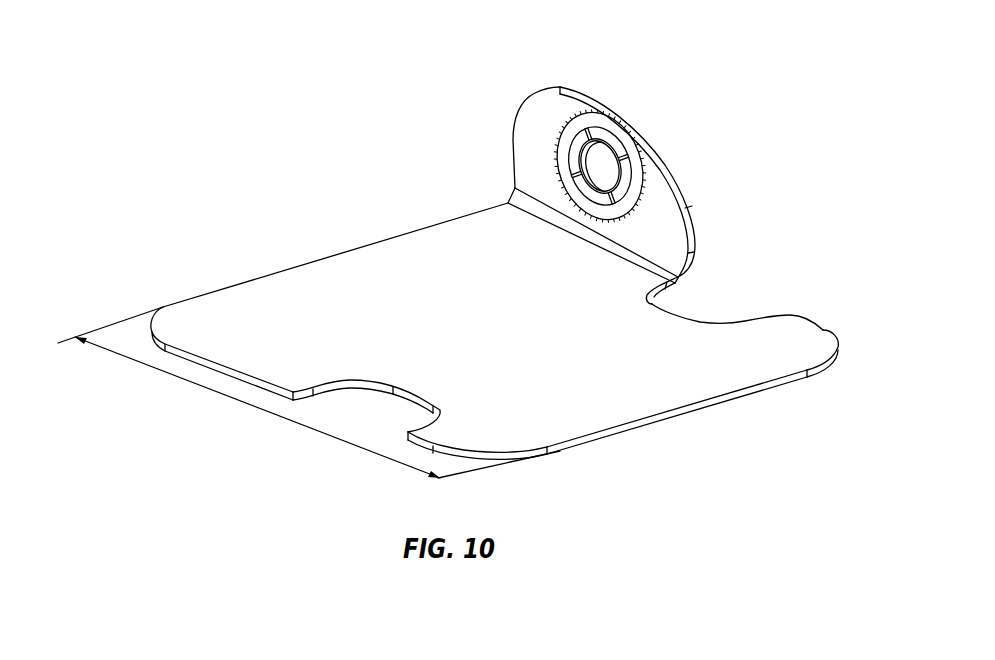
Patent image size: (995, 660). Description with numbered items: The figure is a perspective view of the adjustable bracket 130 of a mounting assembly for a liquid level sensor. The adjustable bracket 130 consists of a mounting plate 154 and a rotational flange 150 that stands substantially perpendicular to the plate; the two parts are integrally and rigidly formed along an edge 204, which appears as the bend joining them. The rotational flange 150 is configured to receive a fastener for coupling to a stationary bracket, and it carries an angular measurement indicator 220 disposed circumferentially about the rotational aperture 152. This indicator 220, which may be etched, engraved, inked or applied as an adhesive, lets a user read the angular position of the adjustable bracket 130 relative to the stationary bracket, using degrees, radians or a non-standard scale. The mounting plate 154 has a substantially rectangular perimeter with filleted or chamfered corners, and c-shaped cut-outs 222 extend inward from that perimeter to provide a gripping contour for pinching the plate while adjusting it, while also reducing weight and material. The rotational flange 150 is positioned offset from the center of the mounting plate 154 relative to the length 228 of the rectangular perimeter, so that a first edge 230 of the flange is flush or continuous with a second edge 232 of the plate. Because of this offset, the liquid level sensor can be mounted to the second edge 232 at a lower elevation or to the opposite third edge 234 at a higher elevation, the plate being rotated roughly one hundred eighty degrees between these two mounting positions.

The adjustable bracket 130 is at (311, 105).
The rotational flange 150 is at (663, 183).
The rotational aperture 152 is at (620, 143).
The mounting plate 154 is at (550, 408).
The edge 204 is at (663, 255).
The angular measurement indicator 220 is at (585, 112).
The cut-outs 222 is at (726, 295).
The length 228 is at (260, 410).
The first edge 230 is at (512, 140).
The second edge 232 is at (357, 247).
The third edge 234 is at (688, 415).